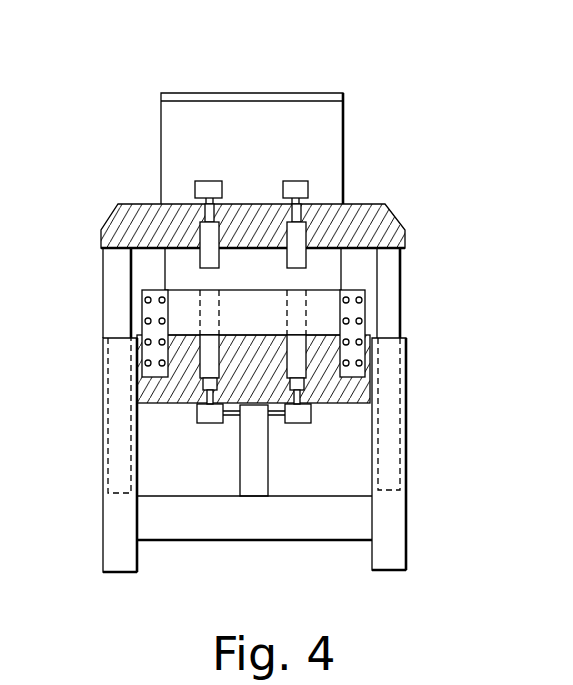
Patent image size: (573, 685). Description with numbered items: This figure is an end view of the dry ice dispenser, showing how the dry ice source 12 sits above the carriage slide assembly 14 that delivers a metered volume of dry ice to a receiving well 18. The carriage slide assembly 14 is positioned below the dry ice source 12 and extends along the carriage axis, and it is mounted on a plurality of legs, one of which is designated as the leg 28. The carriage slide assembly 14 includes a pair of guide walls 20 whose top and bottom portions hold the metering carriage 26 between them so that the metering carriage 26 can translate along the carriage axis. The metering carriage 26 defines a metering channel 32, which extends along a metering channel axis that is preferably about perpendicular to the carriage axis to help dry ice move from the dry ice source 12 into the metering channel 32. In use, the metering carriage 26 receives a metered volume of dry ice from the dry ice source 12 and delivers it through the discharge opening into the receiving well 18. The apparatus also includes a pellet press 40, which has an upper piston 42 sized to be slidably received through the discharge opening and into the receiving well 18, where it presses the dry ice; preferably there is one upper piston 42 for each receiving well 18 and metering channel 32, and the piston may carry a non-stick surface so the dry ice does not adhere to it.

The dry ice source 12 is at (297, 128).
The carriage slide assembly 14 is at (365, 305).
The receiving well 18 is at (167, 388).
The guide walls 20 is at (157, 312).
The metering carriage 26 is at (187, 300).
The leg 28 is at (392, 524).
The metering channel 32 is at (295, 305).
The pellet press 40 is at (416, 201).
The upper piston 42 is at (203, 238).